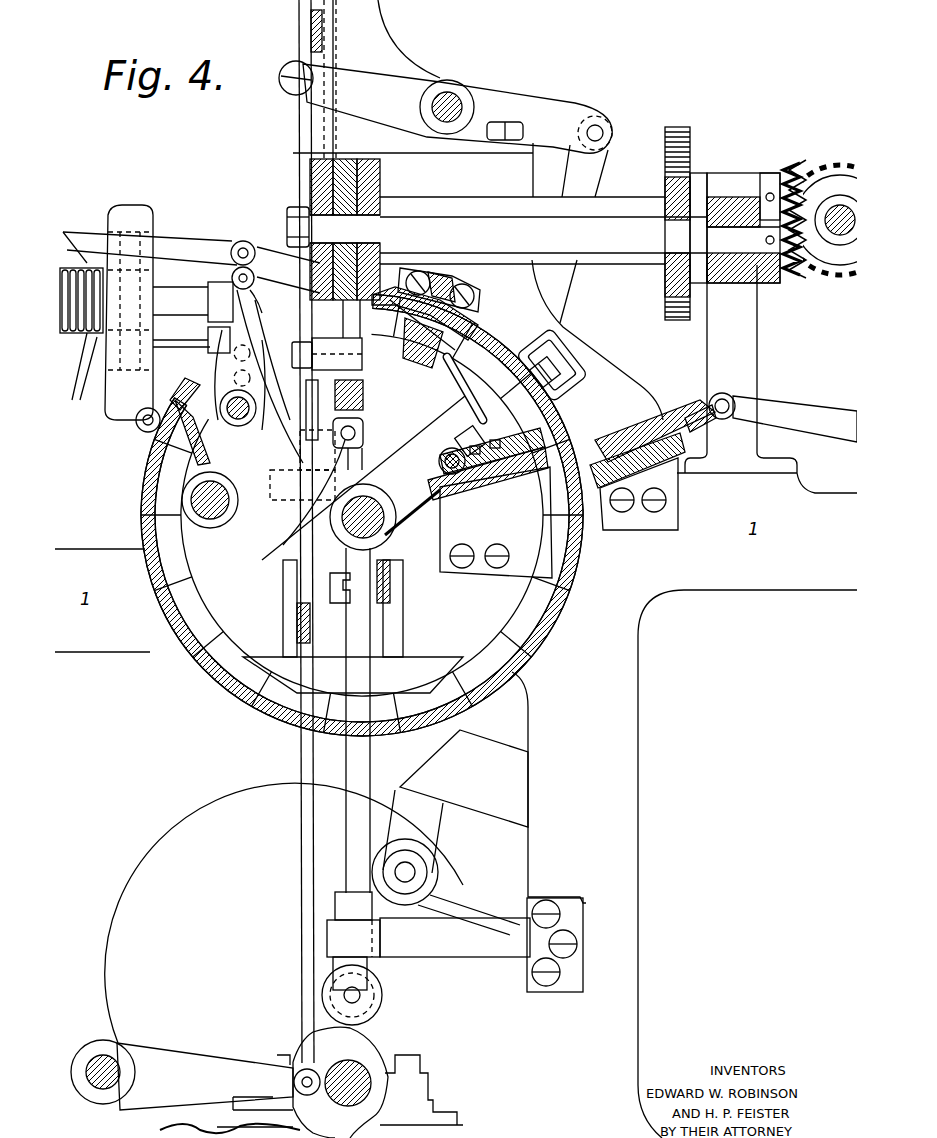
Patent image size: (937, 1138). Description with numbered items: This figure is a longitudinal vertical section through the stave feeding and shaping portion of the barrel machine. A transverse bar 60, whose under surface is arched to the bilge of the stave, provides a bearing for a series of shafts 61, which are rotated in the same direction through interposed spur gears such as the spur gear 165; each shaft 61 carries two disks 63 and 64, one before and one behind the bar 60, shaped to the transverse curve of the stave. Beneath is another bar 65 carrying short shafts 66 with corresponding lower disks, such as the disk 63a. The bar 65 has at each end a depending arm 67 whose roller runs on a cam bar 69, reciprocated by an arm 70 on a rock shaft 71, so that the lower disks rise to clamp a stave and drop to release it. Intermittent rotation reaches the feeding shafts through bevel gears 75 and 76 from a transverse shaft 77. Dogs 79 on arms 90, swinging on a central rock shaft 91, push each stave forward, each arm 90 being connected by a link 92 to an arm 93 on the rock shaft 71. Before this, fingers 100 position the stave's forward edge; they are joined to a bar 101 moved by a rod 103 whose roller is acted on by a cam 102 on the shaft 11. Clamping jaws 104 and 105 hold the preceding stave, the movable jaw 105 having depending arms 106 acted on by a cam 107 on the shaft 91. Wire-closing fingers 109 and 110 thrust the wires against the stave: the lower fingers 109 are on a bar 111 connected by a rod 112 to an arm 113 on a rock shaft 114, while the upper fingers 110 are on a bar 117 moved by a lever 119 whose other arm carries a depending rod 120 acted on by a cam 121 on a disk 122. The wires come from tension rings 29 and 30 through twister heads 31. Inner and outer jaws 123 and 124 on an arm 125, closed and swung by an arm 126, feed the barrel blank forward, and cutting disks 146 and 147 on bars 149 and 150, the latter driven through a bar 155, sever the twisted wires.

The shaft 11 is at (337, 1094).
The tension ring 29 is at (120, 232).
The tension ring 30 is at (96, 316).
The twister head 31 is at (232, 250).
The bar 60 is at (347, 160).
The shaft 61 is at (543, 230).
The disk 63 is at (311, 183).
The disk 63a is at (263, 299).
The disk 64 is at (382, 186).
The bar 65 is at (334, 410).
The short shaft 66 is at (327, 354).
The depending arm 67 is at (355, 444).
The cam bar 69 is at (292, 527).
The arm 70 is at (150, 477).
The rock shaft 71 is at (207, 520).
The bevel gear 75 is at (787, 170).
The bevel gear 76 is at (838, 168).
The transverse shaft 77 is at (840, 232).
The dog 79 is at (249, 380).
The arm 90 is at (292, 488).
The rock shaft 91 is at (393, 538).
The link 92 is at (172, 404).
The arm 93 is at (150, 447).
The finger 100 is at (398, 282).
The bar 101 is at (395, 591).
The cam 102 is at (340, 1082).
The rod 103 is at (352, 806).
The clamping jaw 104 is at (457, 284).
The clamping jaw 105 is at (432, 343).
The depending arm 106 is at (424, 367).
The cam 107 is at (312, 495).
The finger 109 is at (285, 569).
The finger 110 is at (323, 140).
The bar 111 is at (297, 629).
The rod 112 is at (301, 905).
The arm 113 is at (218, 1076).
The rock shaft 114 is at (103, 1054).
The bar 117 is at (323, 37).
The lever 119 is at (445, 107).
The depending rod 120 is at (565, 293).
The cam 121 is at (450, 832).
The disk 122 is at (284, 913).
The inner jaw 123 is at (478, 434).
The outer jaw 124 is at (578, 347).
The arm 125 is at (436, 453).
The arm 126 is at (578, 375).
The cutting disk 146 is at (490, 512).
The cutting disk 147 is at (592, 430).
The bar 149 is at (452, 480).
The bar 150 is at (648, 460).
The bar 155 is at (771, 417).
The spur gear 165 is at (675, 130).